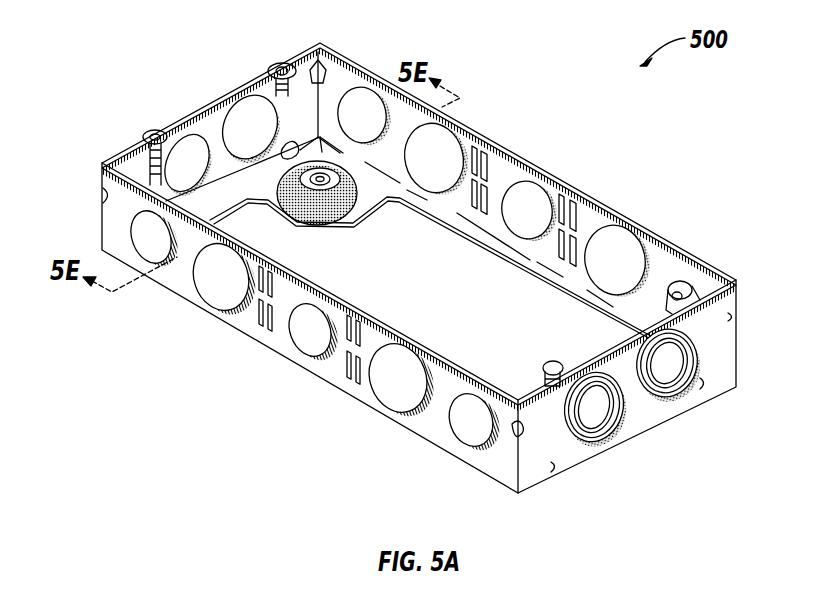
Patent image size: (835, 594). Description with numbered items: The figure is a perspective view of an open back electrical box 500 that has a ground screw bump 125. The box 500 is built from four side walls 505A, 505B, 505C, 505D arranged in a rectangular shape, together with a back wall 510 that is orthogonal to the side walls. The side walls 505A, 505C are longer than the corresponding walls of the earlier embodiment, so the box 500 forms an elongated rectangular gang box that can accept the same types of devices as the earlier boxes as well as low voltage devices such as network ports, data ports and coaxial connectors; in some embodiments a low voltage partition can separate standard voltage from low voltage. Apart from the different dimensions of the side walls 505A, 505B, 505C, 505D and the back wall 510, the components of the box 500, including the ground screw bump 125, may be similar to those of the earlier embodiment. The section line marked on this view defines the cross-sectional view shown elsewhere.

The open back electrical box 500 is at (419, 261).
The side wall 505A is at (660, 257).
The side wall 505B is at (633, 417).
The side wall 505C is at (280, 343).
The side wall 505D is at (212, 122).
The back wall 510 is at (322, 136).
The ground screw bump 125 is at (337, 199).